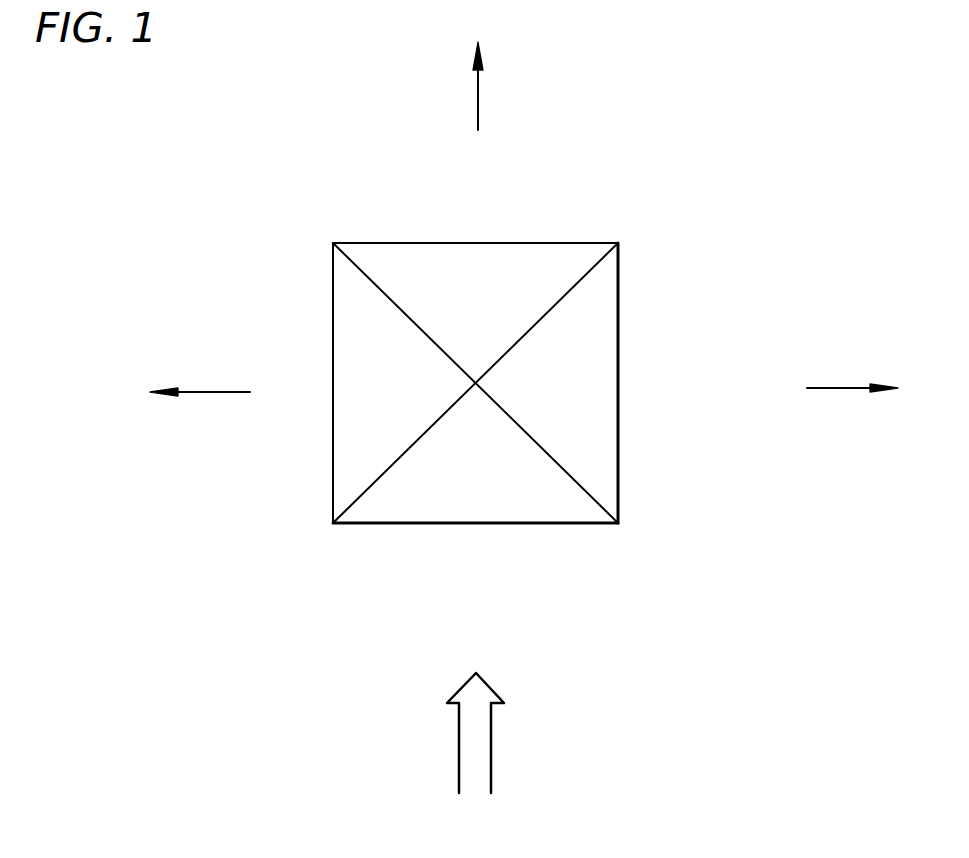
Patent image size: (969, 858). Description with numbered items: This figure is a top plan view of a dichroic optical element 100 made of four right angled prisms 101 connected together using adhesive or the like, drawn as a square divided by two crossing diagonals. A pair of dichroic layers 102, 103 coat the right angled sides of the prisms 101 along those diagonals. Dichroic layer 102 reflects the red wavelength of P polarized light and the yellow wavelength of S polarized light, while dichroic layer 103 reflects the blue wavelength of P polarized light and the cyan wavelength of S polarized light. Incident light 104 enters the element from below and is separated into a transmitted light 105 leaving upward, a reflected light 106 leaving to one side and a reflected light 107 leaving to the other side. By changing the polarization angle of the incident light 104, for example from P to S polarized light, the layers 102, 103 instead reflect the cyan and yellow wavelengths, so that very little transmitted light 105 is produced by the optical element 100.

The dichroic optical element 100 is at (290, 258).
The right angled prisms 101 is at (619, 377).
The dichroic layer 102 is at (600, 270).
The dichroic layer 103 is at (358, 268).
The incident light 104 is at (491, 733).
The transmitted light 105 is at (478, 106).
The reflected light 106 is at (218, 392).
The reflected light 107 is at (833, 388).